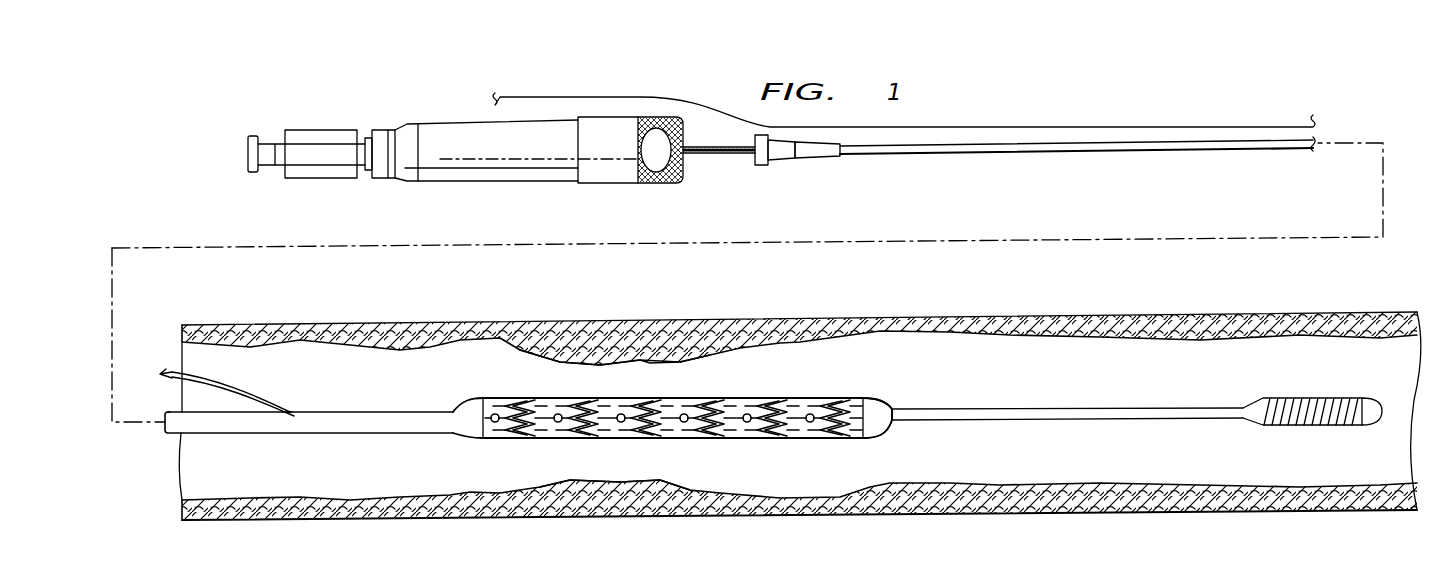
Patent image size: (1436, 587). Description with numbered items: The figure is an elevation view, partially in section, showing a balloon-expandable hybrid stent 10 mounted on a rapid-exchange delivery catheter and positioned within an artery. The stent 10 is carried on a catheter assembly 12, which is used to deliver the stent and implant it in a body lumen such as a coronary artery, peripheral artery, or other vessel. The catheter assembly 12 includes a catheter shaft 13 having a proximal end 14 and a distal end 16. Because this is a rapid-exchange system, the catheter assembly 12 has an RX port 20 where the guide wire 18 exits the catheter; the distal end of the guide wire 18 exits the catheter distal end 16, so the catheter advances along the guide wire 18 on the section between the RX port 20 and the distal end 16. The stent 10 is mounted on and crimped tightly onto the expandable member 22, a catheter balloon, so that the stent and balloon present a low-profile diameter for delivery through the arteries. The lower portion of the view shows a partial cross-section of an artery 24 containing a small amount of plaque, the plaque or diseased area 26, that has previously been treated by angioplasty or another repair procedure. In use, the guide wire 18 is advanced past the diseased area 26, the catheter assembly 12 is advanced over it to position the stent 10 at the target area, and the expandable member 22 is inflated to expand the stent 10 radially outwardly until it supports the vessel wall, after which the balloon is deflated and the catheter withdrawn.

The hybrid stent 10 is at (482, 398).
The catheter assembly 12 is at (1007, 158).
The catheter shaft 13 is at (938, 155).
The proximal end 14 is at (303, 129).
The distal end 16 is at (890, 401).
The guide wire 18 is at (184, 363).
The RX port 20 is at (290, 410).
The expandable member 22 is at (872, 436).
The artery 24 is at (735, 323).
The plaque or diseased area 26 is at (715, 491).